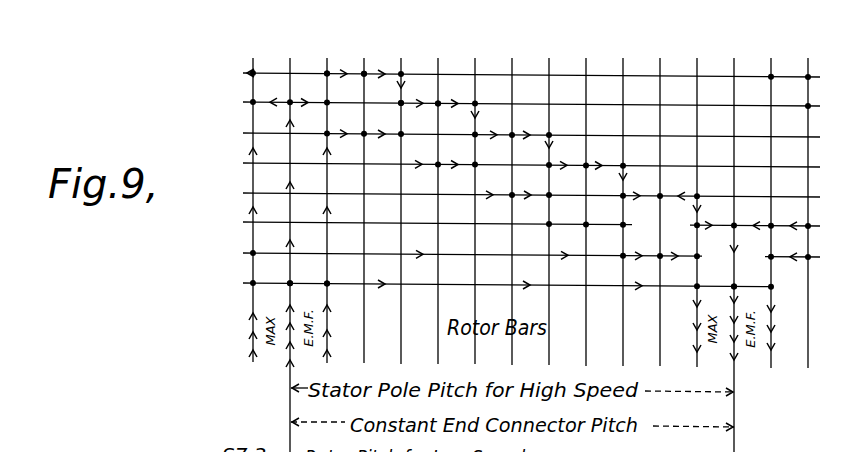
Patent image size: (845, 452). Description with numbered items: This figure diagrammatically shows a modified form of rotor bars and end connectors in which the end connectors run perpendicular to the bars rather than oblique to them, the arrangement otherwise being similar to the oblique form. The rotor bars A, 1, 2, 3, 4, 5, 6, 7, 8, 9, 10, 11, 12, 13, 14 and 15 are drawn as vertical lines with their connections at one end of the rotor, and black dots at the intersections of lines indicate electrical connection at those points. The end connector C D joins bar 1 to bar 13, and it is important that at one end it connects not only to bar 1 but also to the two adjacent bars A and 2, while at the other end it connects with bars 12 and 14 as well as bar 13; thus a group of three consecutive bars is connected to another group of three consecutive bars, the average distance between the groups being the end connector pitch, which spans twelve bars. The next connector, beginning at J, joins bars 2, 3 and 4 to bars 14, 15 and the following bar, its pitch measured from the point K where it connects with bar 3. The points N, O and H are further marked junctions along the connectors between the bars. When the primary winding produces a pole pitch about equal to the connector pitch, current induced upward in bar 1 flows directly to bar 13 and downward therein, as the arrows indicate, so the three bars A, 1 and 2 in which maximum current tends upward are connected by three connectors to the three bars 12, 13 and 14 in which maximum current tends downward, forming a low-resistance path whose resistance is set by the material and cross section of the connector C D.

The rotor bar A is at (252, 199).
The rotor bar 1 is at (290, 244).
The rotor bar 2 is at (327, 200).
The rotor bar 3 is at (364, 200).
The rotor bar 4 is at (401, 200).
The rotor bar 5 is at (438, 200).
The rotor bar 6 is at (475, 200).
The rotor bar 7 is at (512, 201).
The rotor bar 8 is at (549, 201).
The rotor bar 9 is at (586, 201).
The rotor bar 10 is at (623, 201).
The rotor bar 11 is at (660, 201).
The rotor bar 12 is at (697, 202).
The rotor bar 13 is at (734, 244).
The rotor bar 14 is at (771, 202).
The rotor bar 15 is at (808, 202).
The end connector end point J is at (328, 82).
The connection point K is at (370, 84).
The connection point N is at (394, 111).
The connection point O is at (445, 114).
The end connector end point C is at (297, 274).
The connection point H is at (334, 274).
The end connector end point D is at (741, 279).